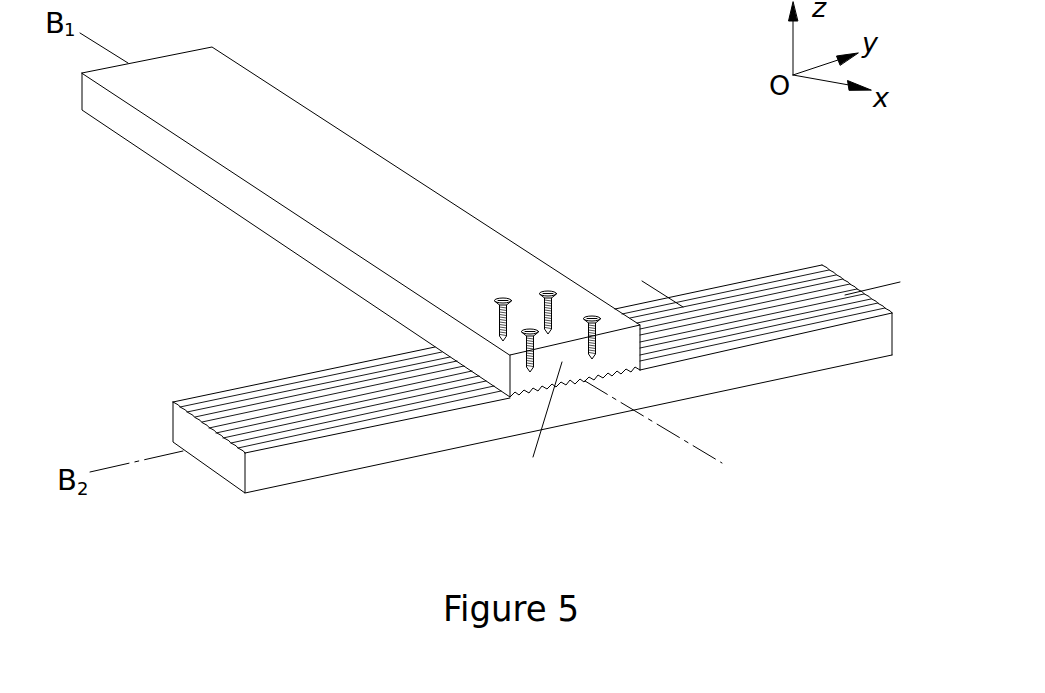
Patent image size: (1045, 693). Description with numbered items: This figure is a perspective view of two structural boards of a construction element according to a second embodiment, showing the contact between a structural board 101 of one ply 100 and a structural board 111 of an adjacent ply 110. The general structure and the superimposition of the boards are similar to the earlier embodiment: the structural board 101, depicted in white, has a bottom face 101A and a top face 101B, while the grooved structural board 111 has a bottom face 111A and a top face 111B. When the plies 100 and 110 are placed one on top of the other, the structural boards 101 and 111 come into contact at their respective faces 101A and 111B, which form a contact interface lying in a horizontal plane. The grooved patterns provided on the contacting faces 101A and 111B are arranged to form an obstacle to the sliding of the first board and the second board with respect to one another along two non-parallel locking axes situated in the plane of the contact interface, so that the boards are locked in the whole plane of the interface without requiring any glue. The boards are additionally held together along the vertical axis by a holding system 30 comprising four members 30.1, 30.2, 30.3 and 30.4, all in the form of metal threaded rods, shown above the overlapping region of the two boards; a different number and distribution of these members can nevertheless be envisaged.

The ply 100 is at (78, 153).
The structural board 101 is at (244, 74).
The bottom face 101A is at (267, 235).
The top face 101B is at (273, 120).
The ply 110 is at (185, 500).
The structural board 111 is at (834, 358).
The bottom face 111A is at (320, 477).
The top face 111B is at (745, 292).
The holding system members 30 is at (478, 321).
The member 30.1 is at (503, 297).
The member 30.2 is at (575, 363).
The member 30.3 is at (549, 289).
The member 30.4 is at (598, 331).